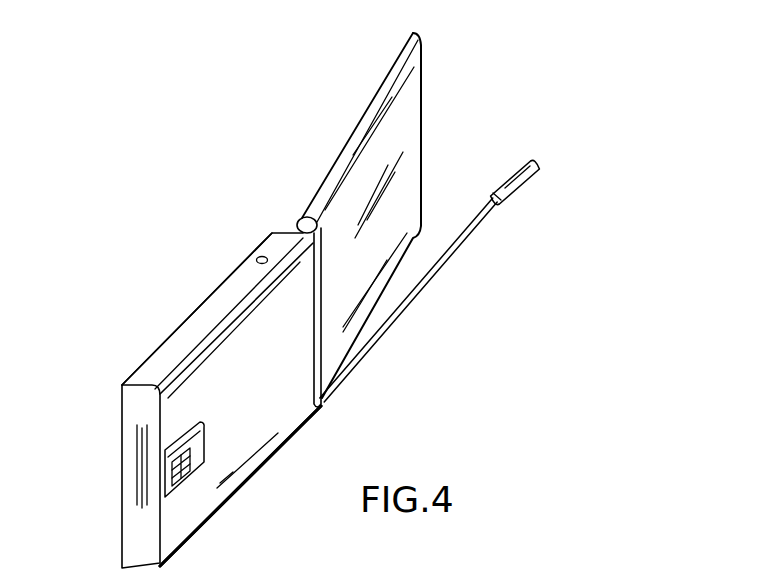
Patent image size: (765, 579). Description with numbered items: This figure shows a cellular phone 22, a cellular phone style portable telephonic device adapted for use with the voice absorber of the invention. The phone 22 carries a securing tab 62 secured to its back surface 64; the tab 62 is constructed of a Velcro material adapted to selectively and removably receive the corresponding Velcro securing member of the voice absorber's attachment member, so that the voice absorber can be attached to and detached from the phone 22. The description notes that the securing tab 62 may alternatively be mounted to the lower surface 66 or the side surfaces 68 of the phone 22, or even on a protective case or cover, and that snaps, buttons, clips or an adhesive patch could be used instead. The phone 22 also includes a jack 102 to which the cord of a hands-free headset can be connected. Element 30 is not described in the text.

The cellular phone 22 is at (178, 321).
The housing end wall 30 is at (122, 473).
The securing tab 62 is at (210, 441).
The back surface 64 is at (318, 410).
The lower surface 66 is at (140, 524).
The side surfaces 68 is at (158, 366).
The jack 102 is at (265, 255).